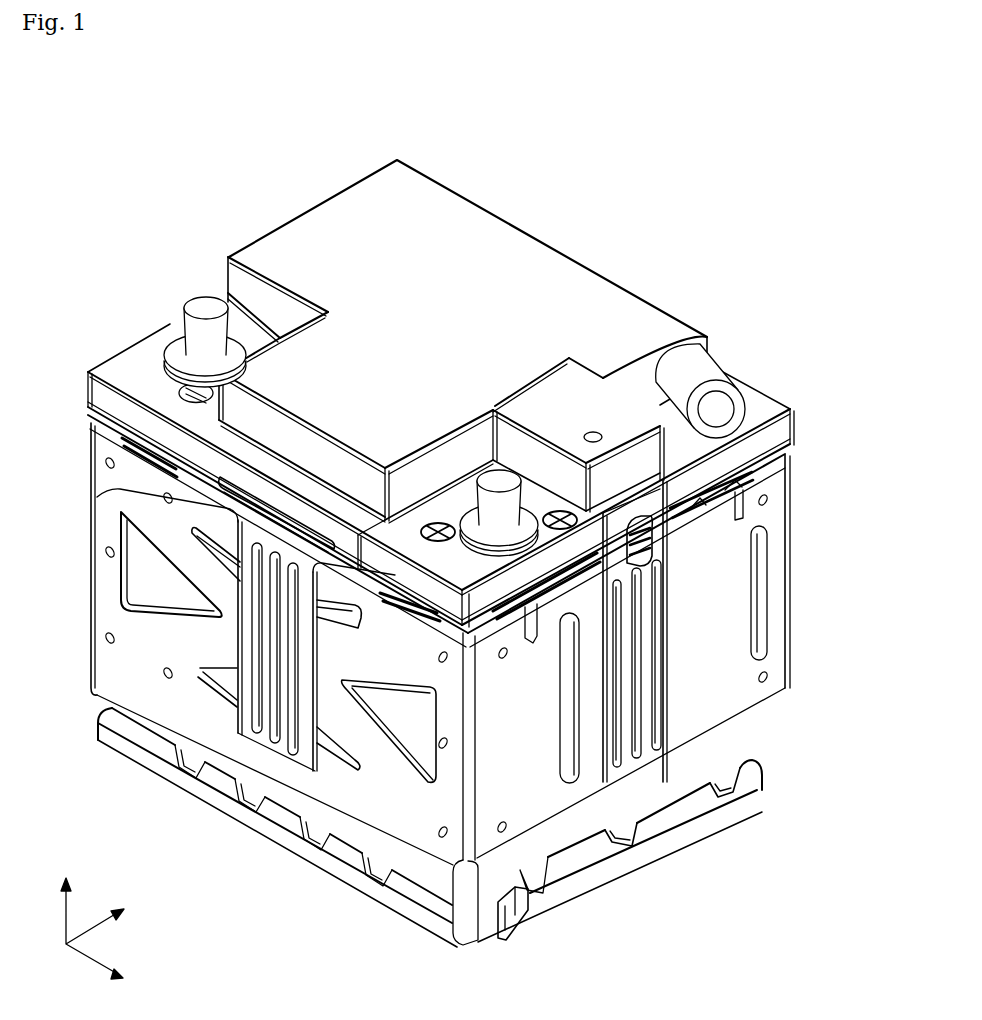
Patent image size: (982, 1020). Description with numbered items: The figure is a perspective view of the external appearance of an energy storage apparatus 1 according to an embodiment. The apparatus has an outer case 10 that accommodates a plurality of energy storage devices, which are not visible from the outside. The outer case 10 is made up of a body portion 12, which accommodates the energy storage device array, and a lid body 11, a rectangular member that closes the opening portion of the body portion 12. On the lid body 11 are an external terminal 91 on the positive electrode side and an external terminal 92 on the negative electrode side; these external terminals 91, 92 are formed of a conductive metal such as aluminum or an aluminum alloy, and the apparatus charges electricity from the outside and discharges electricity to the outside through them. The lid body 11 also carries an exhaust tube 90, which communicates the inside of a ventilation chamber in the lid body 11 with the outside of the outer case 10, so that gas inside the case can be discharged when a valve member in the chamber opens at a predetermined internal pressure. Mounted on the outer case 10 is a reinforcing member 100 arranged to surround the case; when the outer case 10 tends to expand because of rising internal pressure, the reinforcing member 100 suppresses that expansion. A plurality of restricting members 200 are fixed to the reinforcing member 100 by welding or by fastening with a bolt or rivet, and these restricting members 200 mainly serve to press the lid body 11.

The energy storage apparatus 1 is at (596, 194).
The outer case 10 is at (846, 272).
The lid body 11 is at (710, 348).
The body portion 12 is at (760, 746).
The exhaust tube 90 is at (678, 382).
The external terminal 91 is at (490, 478).
The external terminal 92 is at (199, 305).
The reinforcing member 100 is at (90, 468).
The restricting member 200 is at (212, 477).